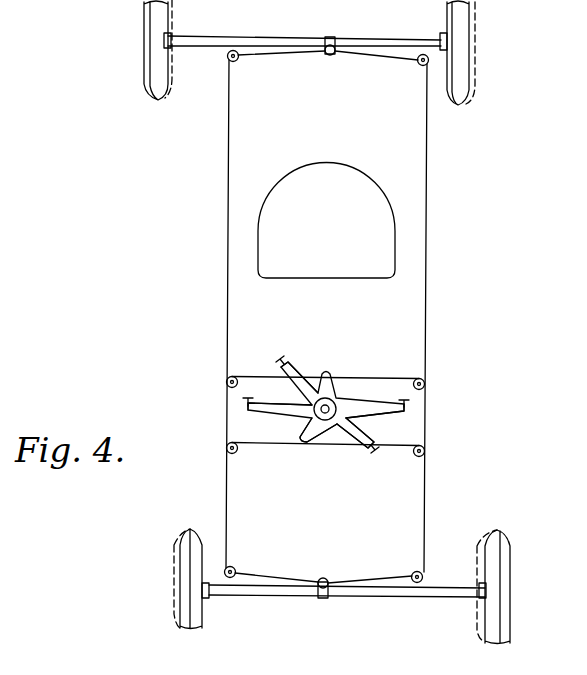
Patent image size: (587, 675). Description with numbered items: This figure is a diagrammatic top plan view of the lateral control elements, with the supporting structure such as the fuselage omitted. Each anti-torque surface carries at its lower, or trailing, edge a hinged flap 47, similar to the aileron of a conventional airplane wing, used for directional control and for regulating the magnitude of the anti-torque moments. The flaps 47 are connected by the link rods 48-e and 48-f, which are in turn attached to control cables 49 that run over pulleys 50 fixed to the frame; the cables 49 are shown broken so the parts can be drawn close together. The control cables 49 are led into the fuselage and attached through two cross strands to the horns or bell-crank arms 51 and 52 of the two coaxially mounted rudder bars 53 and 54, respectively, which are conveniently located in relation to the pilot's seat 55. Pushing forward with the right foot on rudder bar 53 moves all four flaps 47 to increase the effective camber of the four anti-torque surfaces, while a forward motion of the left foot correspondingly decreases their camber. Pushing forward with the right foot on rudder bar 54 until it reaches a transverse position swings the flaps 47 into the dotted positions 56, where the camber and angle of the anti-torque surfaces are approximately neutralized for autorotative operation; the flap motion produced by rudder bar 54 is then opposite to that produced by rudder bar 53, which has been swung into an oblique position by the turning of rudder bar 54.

The hinged flap 47 is at (147, 63).
The link rod 48-f is at (283, 37).
The link rod 48-e is at (397, 592).
The control cable 49 is at (427, 223).
The pulley 50 is at (238, 61).
The horn or bell-crank arm 51 is at (331, 382).
The horn or bell-crank arm 52 is at (322, 428).
The rudder bar 53 is at (262, 404).
The rudder bar 54 is at (303, 387).
The pilot's seat 55 is at (326, 221).
The dotted flap position 56 is at (172, 70).